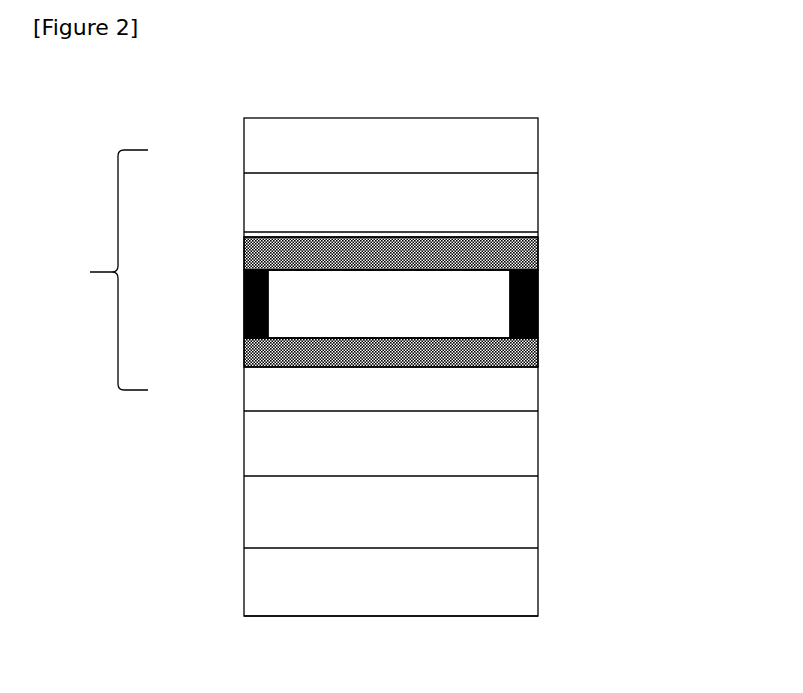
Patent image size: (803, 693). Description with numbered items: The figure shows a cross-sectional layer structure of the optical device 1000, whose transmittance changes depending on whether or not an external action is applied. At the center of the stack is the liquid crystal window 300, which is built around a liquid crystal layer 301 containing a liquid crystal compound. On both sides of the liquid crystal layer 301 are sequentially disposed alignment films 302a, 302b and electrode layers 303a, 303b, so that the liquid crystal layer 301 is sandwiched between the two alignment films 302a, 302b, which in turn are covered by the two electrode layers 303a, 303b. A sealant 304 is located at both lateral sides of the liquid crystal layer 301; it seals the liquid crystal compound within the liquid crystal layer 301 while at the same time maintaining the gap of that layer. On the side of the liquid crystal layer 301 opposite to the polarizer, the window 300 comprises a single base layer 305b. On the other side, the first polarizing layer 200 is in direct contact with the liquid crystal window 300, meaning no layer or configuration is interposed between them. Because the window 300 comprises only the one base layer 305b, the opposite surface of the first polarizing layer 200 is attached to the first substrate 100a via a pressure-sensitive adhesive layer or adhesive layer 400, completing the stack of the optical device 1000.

The optical device 1000 is at (200, 85).
The liquid crystal window 300 is at (94, 270).
The sealant 304 is at (244, 300).
The base layer 305b is at (538, 140).
The electrode layer 303b is at (538, 207).
The alignment film 302b is at (538, 253).
The liquid crystal layer 301 is at (497, 298).
The alignment film 302a is at (538, 352).
The electrode layer 303a is at (538, 393).
The first polarizing layer 200 is at (244, 448).
The pressure-sensitive adhesive layer or adhesive layer 400 is at (244, 532).
The first substrate 100a is at (244, 598).